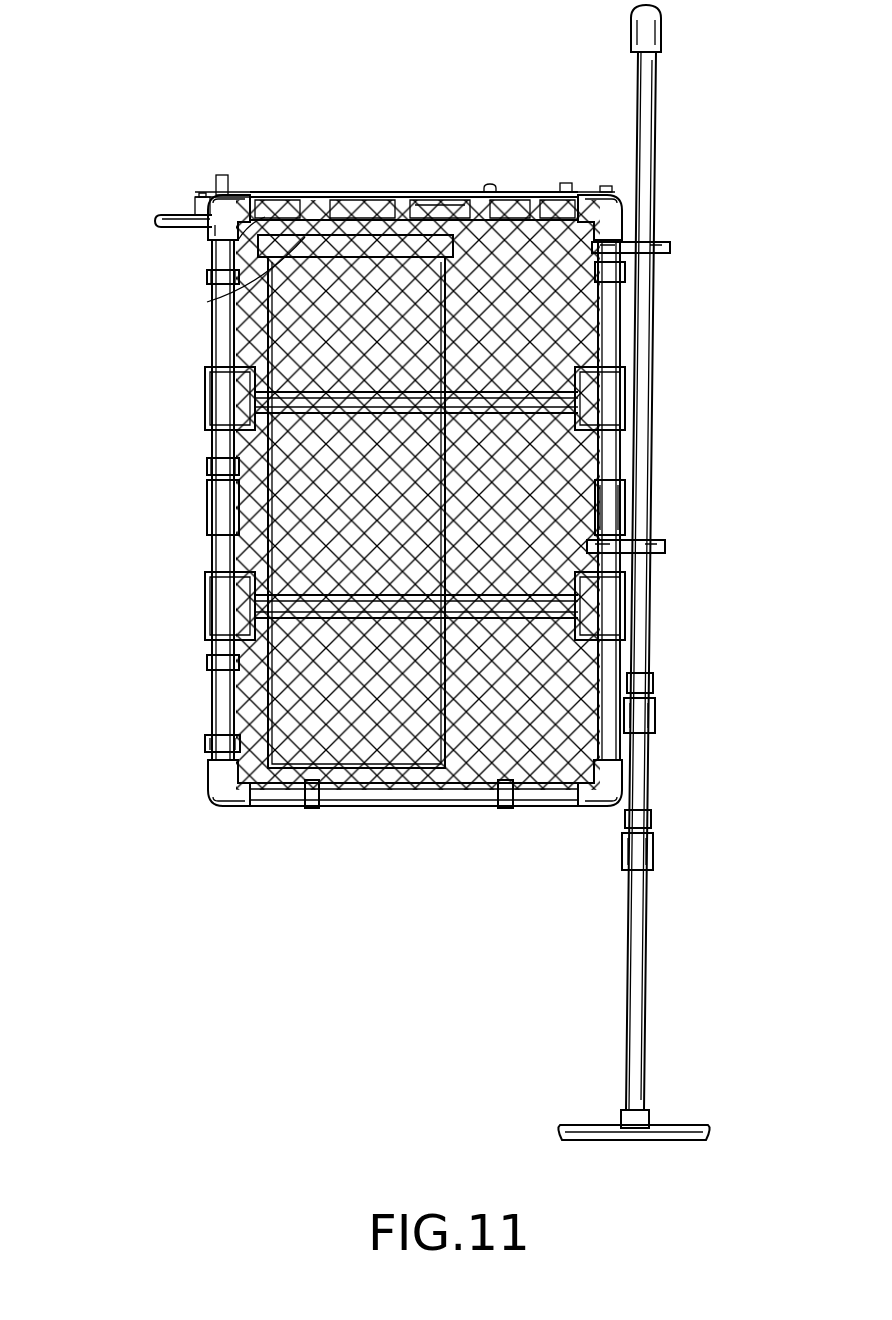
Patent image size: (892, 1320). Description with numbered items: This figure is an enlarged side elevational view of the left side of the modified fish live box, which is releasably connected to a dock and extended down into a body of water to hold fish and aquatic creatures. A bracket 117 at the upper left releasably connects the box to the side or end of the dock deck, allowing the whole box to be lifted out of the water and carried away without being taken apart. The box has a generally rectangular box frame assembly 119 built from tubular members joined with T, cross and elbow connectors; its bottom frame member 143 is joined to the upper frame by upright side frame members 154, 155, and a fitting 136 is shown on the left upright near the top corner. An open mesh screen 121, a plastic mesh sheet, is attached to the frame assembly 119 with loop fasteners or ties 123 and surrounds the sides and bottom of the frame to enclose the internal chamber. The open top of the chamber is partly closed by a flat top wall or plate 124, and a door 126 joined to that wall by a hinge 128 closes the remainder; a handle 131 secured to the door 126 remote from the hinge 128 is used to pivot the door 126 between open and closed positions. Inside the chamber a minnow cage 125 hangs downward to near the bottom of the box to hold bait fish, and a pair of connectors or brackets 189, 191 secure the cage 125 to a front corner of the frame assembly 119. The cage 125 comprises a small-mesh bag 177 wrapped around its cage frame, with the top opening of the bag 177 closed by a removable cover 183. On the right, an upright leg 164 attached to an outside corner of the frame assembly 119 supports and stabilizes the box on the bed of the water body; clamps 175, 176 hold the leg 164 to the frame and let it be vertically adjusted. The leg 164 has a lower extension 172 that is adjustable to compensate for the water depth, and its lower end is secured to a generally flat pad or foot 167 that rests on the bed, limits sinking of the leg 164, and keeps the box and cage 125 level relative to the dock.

The bracket 117 is at (160, 212).
The handle 131 is at (222, 180).
The connector or bracket 189 is at (285, 237).
The door 126 is at (305, 195).
The connector or bracket 191 is at (412, 232).
The hinge 128 is at (490, 185).
The flat top wall or plate 124 is at (545, 192).
The clamp 175 is at (672, 245).
The coupling 136 is at (207, 262).
The removable cover 183 is at (207, 302).
The open mesh screen 121 is at (212, 345).
The upright leg 164 is at (648, 348).
The loop fasteners or ties 123 is at (207, 467).
The box frame assembly 119 is at (212, 552).
The minnow cage 125 is at (302, 542).
The upright side frame member 155 is at (222, 678).
The mesh bag 177 is at (282, 690).
The bottom frame member 143 is at (275, 808).
The upright side frame member 154 is at (630, 660).
The clamp 176 is at (668, 555).
The lower extension 172 is at (648, 950).
The pad or foot 167 is at (672, 1128).